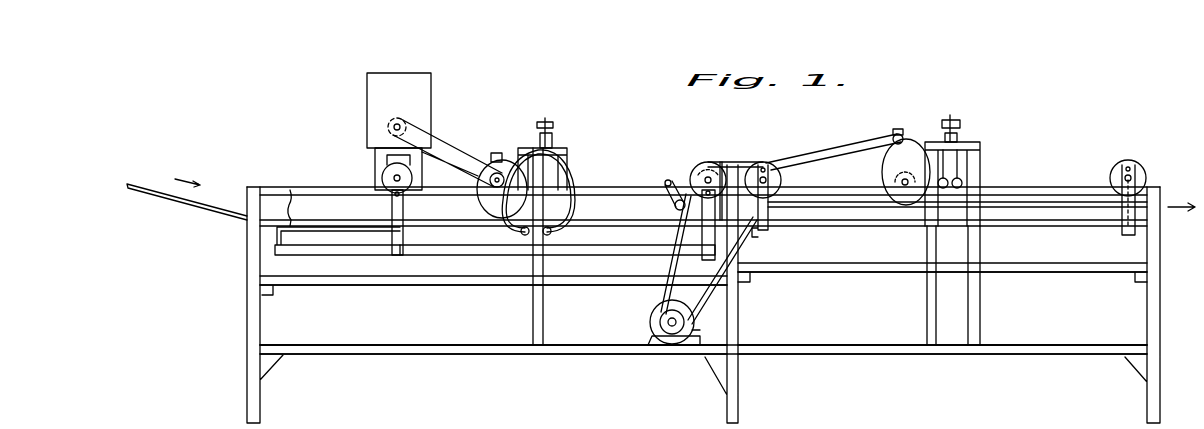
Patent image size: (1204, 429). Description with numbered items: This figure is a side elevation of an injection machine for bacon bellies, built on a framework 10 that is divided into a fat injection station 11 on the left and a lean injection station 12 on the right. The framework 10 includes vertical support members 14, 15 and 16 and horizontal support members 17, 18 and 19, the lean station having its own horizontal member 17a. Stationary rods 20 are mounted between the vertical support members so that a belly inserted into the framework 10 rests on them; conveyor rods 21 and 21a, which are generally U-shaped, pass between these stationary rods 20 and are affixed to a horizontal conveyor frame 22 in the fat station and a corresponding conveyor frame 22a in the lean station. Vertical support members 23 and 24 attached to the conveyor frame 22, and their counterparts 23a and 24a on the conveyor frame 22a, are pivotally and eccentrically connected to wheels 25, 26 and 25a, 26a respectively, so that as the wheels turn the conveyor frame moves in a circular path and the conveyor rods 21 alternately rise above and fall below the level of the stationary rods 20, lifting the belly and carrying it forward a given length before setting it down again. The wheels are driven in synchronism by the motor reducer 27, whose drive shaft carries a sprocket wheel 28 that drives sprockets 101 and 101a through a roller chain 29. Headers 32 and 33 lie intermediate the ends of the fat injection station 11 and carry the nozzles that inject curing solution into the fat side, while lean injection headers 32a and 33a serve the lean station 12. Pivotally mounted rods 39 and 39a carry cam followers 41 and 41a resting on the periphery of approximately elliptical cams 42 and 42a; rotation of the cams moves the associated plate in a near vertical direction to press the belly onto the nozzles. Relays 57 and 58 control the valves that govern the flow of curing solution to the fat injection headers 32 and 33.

The framework 10 is at (1161, 310).
The fat injection station 11 is at (420, 323).
The lean injection station 12 is at (1040, 322).
The vertical support member 14 is at (247, 401).
The vertical support member 15 is at (727, 397).
The vertical support member 16 is at (1147, 401).
The horizontal support member 17 is at (375, 357).
The horizontal support member 17a is at (860, 357).
The horizontal support member 18 is at (368, 285).
The horizontal support member 19 is at (838, 274).
The stationary rods 20 is at (262, 224).
The conveyor rods 21 is at (290, 190).
The conveyor rods 21a is at (1053, 200).
The conveyor frame 22 is at (315, 250).
The conveyor frame 22a is at (852, 226).
The vertical support member 23 is at (392, 208).
The vertical support member 23a is at (1118, 208).
The vertical support member 24 is at (698, 200).
The vertical support member 24a is at (770, 213).
The wheel 25 is at (382, 178).
The wheel 25a is at (1145, 170).
The wheel 26 is at (714, 160).
The wheel 26a is at (776, 164).
The motor reducer 27 is at (672, 346).
The sprocket wheel 28 is at (657, 340).
The roller chain 29 is at (662, 294).
The header 32 is at (524, 236).
The lean injection header 32a is at (940, 165).
The header 33 is at (549, 236).
The lean injection header 33a is at (963, 183).
The pivotally mounted rod 39 is at (455, 168).
The pivotally mounted rod 39a is at (823, 166).
The cam follower 41 is at (498, 153).
The cam follower 41a is at (898, 134).
The cam 42 is at (480, 202).
The cam 42a is at (893, 158).
The relay 57 is at (553, 122).
The relay 58 is at (961, 123).
The sprocket 101 is at (692, 165).
The sprocket 101a is at (748, 165).